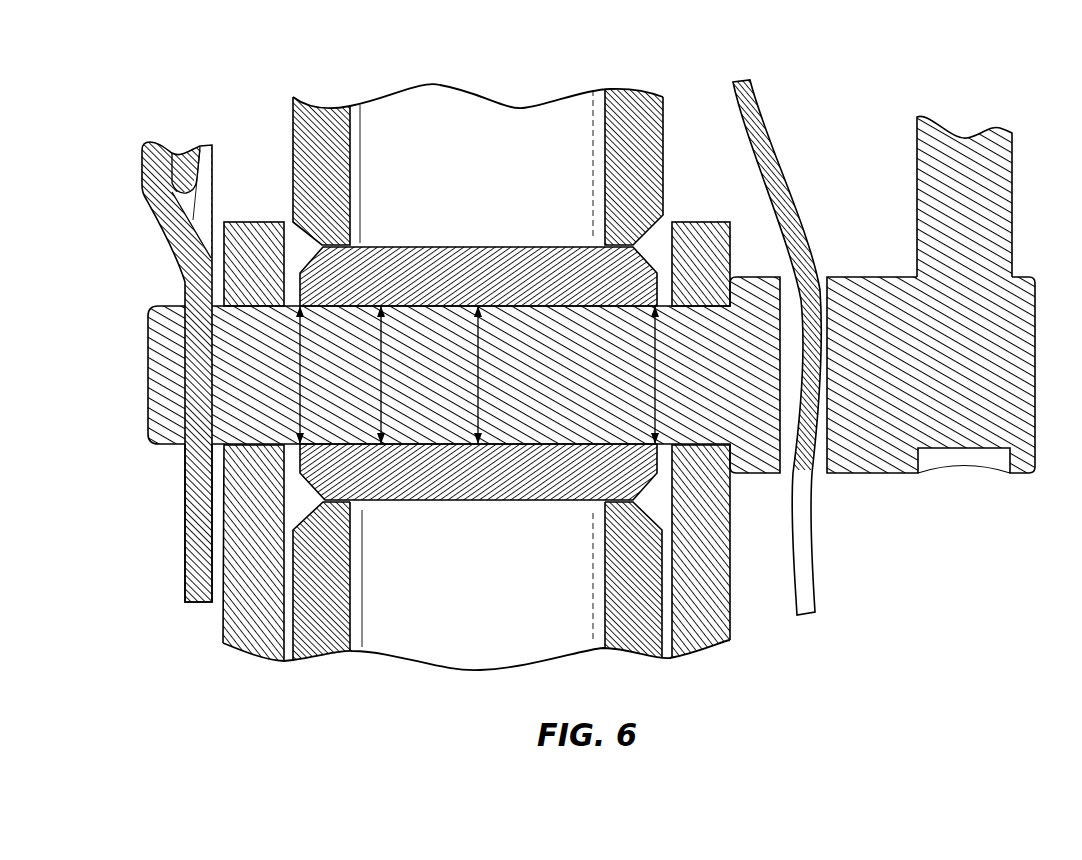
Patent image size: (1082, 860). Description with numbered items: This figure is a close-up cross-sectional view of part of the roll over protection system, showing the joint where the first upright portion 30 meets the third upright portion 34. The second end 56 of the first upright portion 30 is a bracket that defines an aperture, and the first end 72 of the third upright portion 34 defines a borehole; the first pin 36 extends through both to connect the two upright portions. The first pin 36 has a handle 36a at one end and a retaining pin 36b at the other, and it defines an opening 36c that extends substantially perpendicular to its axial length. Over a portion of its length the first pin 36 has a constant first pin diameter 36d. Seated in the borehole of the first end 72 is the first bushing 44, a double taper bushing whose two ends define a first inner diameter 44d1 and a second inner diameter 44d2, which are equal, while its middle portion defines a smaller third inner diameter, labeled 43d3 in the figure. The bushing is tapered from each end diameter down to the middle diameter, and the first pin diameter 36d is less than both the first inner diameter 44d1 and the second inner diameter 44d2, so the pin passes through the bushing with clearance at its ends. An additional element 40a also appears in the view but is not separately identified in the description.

The first upright portion 30 is at (758, 638).
The third upright portion 34 is at (633, 107).
The first pin 36 is at (883, 457).
The handle 36a is at (1012, 186).
The retaining pin 36b is at (150, 170).
The opening 36c is at (185, 448).
The first pin diameter 36d is at (382, 375).
The spring 40a is at (788, 183).
The inner diameter 43d3 is at (479, 375).
The first bushing 44 is at (470, 480).
The first inner diameter 44d1 is at (657, 375).
The second inner diameter 44d2 is at (301, 375).
The second end 56 is at (730, 543).
The first end 72 is at (590, 234).